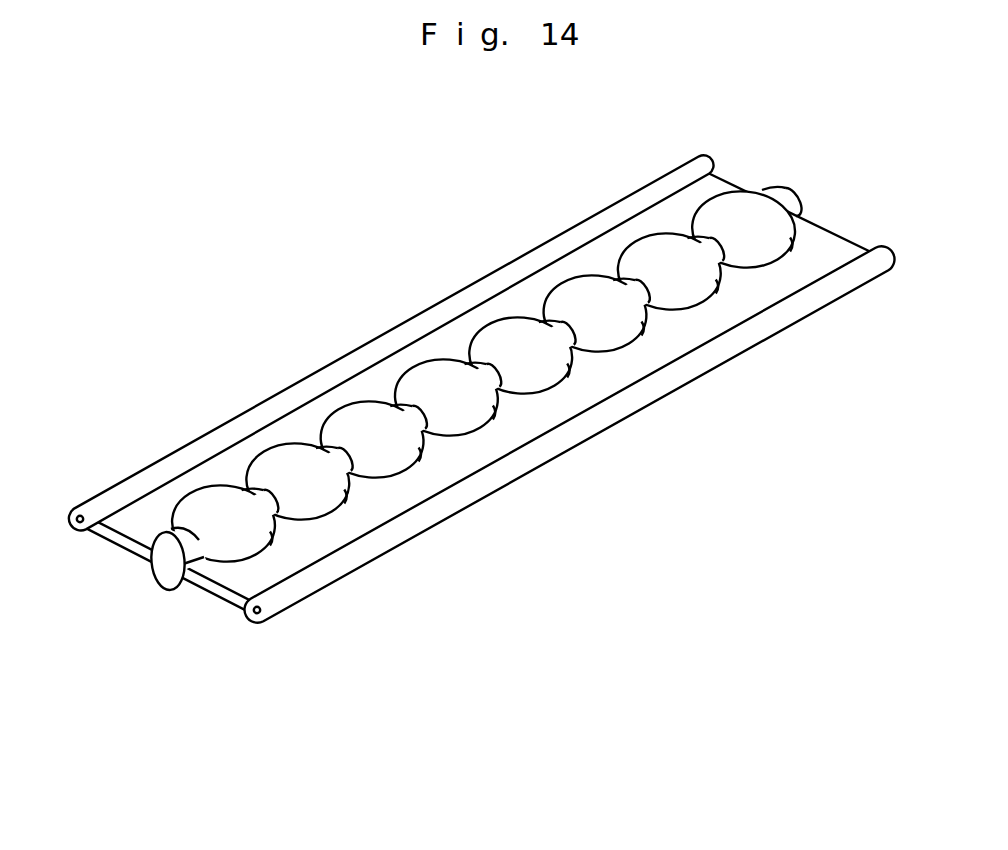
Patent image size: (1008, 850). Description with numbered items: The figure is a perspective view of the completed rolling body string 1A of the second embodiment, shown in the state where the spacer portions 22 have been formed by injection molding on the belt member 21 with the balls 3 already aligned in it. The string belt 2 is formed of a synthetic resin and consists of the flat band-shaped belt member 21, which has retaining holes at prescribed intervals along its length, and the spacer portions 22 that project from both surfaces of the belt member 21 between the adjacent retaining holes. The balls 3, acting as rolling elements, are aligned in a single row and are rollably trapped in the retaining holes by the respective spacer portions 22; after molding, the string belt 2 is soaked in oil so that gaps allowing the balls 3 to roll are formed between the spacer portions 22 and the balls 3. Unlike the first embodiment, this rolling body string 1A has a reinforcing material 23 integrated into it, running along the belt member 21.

The rolling body string 1A is at (468, 417).
The string belt 2 is at (468, 431).
The belt member 21 is at (166, 494).
The spacer portion 22 is at (488, 370).
The reinforcing material 23 is at (70, 518).
The ball 3 is at (350, 418).